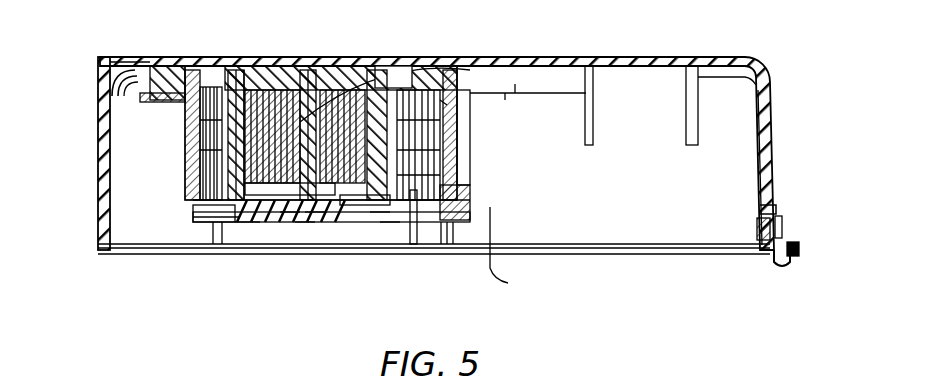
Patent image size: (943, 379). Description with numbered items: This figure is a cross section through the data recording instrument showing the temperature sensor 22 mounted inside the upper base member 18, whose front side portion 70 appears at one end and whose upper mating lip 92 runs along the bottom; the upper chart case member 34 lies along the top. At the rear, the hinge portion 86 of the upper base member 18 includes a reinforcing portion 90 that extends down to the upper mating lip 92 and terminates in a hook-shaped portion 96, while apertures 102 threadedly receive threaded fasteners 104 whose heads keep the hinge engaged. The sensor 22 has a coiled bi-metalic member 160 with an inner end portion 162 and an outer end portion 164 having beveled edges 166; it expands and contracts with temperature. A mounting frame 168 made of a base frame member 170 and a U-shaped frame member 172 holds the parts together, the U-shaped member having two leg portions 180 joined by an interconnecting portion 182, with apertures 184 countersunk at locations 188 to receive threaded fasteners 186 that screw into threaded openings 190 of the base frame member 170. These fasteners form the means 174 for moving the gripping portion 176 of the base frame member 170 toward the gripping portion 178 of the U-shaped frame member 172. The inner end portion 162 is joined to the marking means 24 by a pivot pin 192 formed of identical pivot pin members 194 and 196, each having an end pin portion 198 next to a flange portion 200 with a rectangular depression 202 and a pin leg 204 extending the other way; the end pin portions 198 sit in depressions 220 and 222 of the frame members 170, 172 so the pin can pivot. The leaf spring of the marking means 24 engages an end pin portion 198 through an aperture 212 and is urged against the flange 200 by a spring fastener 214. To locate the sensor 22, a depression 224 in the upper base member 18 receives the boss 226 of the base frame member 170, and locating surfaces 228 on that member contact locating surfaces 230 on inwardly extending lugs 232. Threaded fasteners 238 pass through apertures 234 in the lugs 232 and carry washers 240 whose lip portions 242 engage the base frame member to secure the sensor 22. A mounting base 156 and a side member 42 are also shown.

The upper base member 18 is at (770, 85).
The sensor 22 is at (511, 252).
The marking means 24 is at (255, 246).
The upper chart case member 34 is at (745, 58).
The housing side wall 42 is at (772, 125).
The front side portion 70 is at (100, 112).
The hinge portion 86 is at (798, 250).
The reinforcing portion 90 is at (777, 210).
The upper mating lip 92 is at (765, 250).
The hook-shaped portion 96 is at (783, 268).
The apertures 102 is at (757, 232).
The threaded fasteners 104 is at (783, 226).
The spacer plate 156 is at (390, 200).
The coiled bi-metalic member 160 is at (420, 68).
The inner end portion 162 is at (393, 77).
The outer end portion 164 is at (458, 142).
The beveled edges 166 is at (396, 244).
The mounting frame 168 is at (200, 176).
The base frame member 170 is at (238, 75).
The U-shaped frame member 172 is at (243, 244).
The means for moving the gripping portion 174 is at (391, 244).
The gripping portion 176 is at (440, 80).
The gripping portion 178 is at (380, 244).
The leg portions 180 is at (325, 122).
The interconnecting portion 182 is at (232, 238).
The apertures 184 is at (190, 192).
The threaded fasteners 186 is at (172, 246).
The counter sunk locations 188 is at (205, 222).
The threaded openings 190 is at (228, 70).
The pivot pin 192 is at (205, 128).
The pivot pin member 194 is at (280, 72).
The pivot pin member 196 is at (318, 220).
The end pin portion 198 is at (330, 68).
The flange portion 200 is at (395, 70).
The depression 202 is at (305, 72).
The pin leg 204 is at (320, 145).
The aperture 212 is at (290, 244).
The spring fastener 214 is at (314, 244).
The depression 220 is at (355, 72).
The depression 222 is at (302, 244).
The depression 224 is at (290, 68).
The boss 226 is at (262, 68).
The locating surfaces 228 is at (192, 68).
The locating surfaces 230 is at (163, 66).
The inwardly extending lugs 232 is at (133, 68).
The apertures 234 is at (122, 68).
The threaded fasteners 238 is at (105, 65).
The washers 240 is at (598, 97).
The lip portions 242 is at (165, 102).